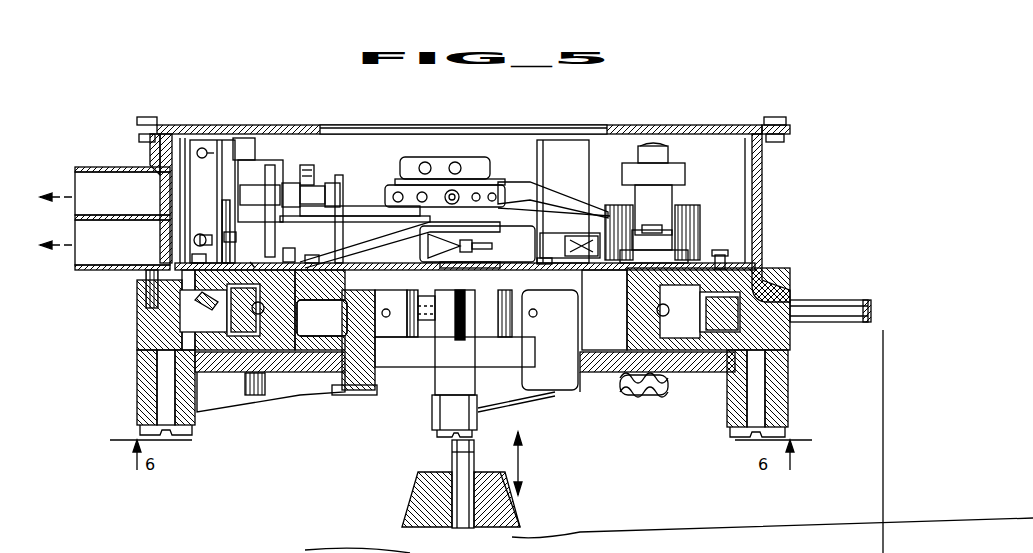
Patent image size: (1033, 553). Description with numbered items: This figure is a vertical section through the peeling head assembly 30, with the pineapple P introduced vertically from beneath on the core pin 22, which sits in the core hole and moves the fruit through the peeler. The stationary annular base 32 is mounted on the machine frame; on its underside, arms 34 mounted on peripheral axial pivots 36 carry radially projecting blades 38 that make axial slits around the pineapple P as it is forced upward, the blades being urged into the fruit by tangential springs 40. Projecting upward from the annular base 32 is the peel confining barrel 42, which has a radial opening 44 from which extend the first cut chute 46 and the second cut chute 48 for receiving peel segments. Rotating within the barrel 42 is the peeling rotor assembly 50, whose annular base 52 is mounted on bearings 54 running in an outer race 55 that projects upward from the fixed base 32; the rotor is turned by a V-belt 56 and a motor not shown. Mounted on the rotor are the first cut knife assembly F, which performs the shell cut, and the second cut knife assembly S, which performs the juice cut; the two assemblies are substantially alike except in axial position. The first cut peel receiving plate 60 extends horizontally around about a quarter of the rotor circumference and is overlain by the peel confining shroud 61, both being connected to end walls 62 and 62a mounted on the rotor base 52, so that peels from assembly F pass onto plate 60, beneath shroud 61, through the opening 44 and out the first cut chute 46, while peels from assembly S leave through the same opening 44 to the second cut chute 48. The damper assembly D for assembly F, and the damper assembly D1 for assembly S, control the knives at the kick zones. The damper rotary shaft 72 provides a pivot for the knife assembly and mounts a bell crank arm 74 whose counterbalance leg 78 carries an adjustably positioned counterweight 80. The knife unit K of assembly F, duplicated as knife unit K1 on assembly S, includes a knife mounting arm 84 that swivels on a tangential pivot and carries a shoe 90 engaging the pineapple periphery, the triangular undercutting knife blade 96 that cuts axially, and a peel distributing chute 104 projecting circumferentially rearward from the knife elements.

The peeling head assembly 30 is at (702, 52).
The peel confining barrel 42 is at (765, 190).
The second cut chute 48 is at (92, 168).
The radial opening 44 is at (160, 178).
The first cut chute 46 is at (82, 262).
The end wall 62 is at (243, 143).
The damper assembly D1 is at (216, 220).
The peel confining shroud 61 is at (365, 228).
The second cut knife assembly S is at (334, 172).
The peel distributing chute 104 is at (430, 163).
The knife unit K1 is at (507, 168).
The triangular undercutting knife blade 96 is at (416, 242).
The radially projecting blade 38 is at (425, 292).
The knife unit K is at (472, 242).
The shoe 90 is at (506, 270).
The end wall 62a is at (582, 140).
The knife mounting arm 84 is at (557, 258).
The damper rotary shaft 72 is at (650, 140).
The first cut knife assembly F is at (684, 160).
The damper assembly D is at (690, 200).
The bell crank arm 74 is at (668, 216).
The counterbalance leg 78 is at (672, 238).
The peeling rotor assembly 50 is at (726, 254).
The annular base 32 is at (140, 342).
The V-belt 56 is at (182, 312).
The annular base 52 is at (322, 318).
The first cut peel receiving plate 60 is at (355, 272).
The bearings 54 is at (257, 312).
The outer race 55 is at (660, 308).
The counterweight 80 is at (640, 272).
The tangential spring 40 is at (293, 395).
The arm 34 is at (300, 400).
The peripheral axial pivot 36 is at (165, 405).
The core pin 22 is at (455, 470).
The pineapple P is at (403, 510).